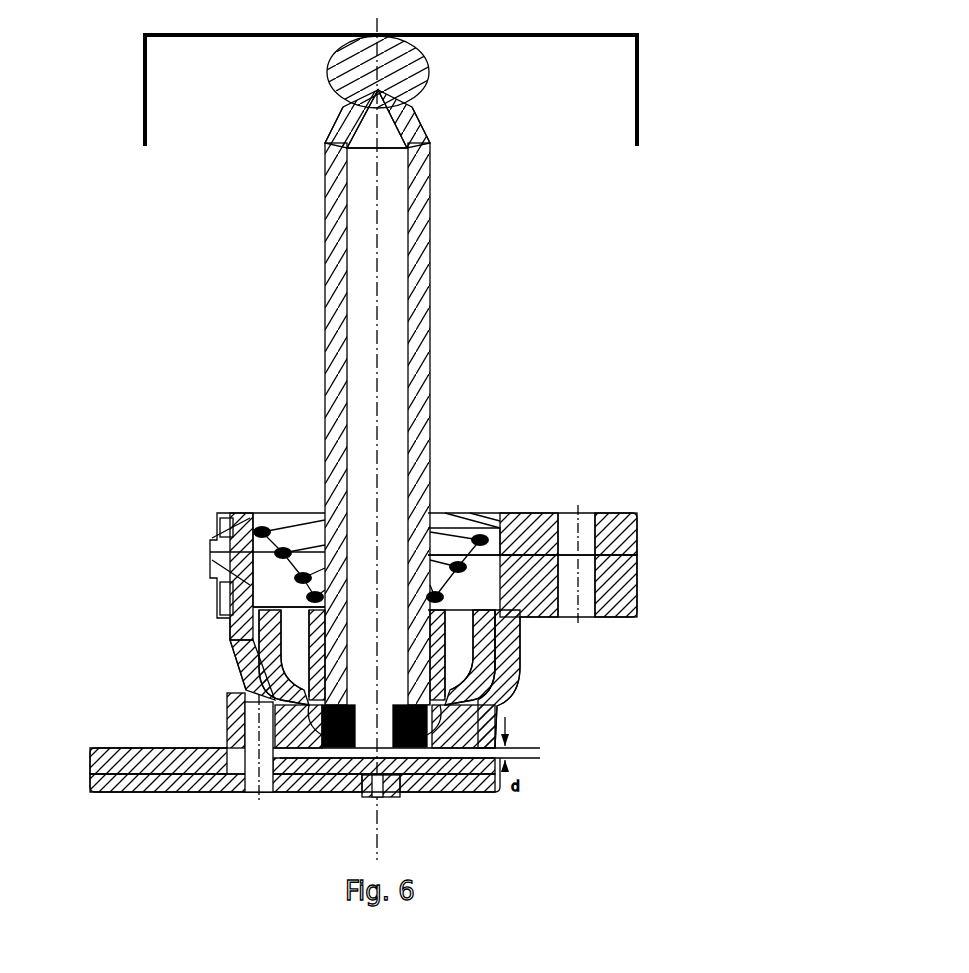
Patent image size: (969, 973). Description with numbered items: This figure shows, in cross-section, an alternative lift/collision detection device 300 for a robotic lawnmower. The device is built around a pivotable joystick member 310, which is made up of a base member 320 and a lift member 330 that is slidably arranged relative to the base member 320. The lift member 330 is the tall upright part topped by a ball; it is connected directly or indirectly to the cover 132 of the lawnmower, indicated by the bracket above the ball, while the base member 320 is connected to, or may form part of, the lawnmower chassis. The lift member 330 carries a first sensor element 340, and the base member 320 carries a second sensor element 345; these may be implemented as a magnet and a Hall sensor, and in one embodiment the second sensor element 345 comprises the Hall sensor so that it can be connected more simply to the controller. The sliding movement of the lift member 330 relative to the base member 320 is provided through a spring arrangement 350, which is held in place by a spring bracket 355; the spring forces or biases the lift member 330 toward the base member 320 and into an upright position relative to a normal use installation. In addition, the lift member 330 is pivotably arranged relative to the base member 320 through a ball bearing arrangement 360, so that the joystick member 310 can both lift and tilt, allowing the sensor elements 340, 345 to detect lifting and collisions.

The cover 132 is at (642, 97).
The lift/collision detection device 300 is at (643, 587).
The pivotable joystick member 310 is at (434, 377).
The base member 320 is at (217, 567).
The lift member 330 is at (325, 213).
The first sensor element 340 is at (505, 753).
The second sensor element 345 is at (410, 800).
The spring arrangement 350 is at (478, 524).
The spring bracket 355 is at (643, 528).
The ball bearing arrangement 360 is at (510, 666).